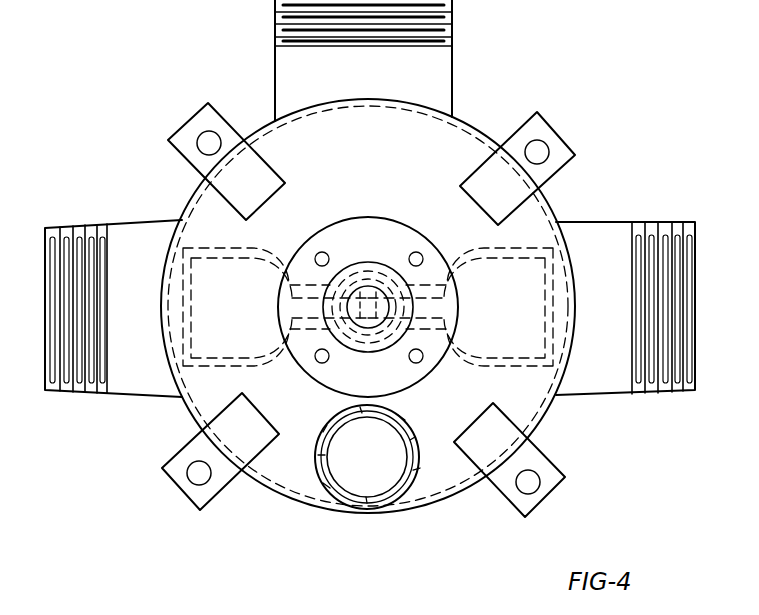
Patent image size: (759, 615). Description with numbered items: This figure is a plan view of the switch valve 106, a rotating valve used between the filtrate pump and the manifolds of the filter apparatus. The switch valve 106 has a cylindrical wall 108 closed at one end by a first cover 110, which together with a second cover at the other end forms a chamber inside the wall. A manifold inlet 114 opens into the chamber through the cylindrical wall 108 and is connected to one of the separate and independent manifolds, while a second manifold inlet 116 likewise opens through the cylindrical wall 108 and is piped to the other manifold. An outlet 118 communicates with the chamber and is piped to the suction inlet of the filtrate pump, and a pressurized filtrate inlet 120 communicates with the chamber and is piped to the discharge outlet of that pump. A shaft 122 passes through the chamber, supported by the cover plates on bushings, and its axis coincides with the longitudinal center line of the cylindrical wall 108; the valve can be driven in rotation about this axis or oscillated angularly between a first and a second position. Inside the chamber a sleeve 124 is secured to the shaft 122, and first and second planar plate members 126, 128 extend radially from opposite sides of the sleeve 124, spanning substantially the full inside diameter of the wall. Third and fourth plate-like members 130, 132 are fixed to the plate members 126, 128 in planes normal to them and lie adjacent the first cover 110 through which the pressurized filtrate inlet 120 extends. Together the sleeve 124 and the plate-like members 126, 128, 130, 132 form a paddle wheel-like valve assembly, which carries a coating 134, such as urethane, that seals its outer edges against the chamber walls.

The switch valve 106 is at (645, 90).
The cylindrical wall 108 is at (457, 122).
The first cover 110 is at (471, 135).
The manifold inlet 114 is at (668, 200).
The second manifold inlet 116 is at (95, 205).
The outlet 118 is at (275, 18).
The pressurized filtrate inlet 120 is at (322, 487).
The shaft 122 is at (383, 300).
The sleeve 124 is at (348, 296).
The first planar plate member 126 is at (525, 320).
The second planar plate member 128 is at (193, 318).
The third plate-like member 130 is at (517, 360).
The fourth plate-like member 132 is at (215, 362).
The coating 134 is at (235, 370).